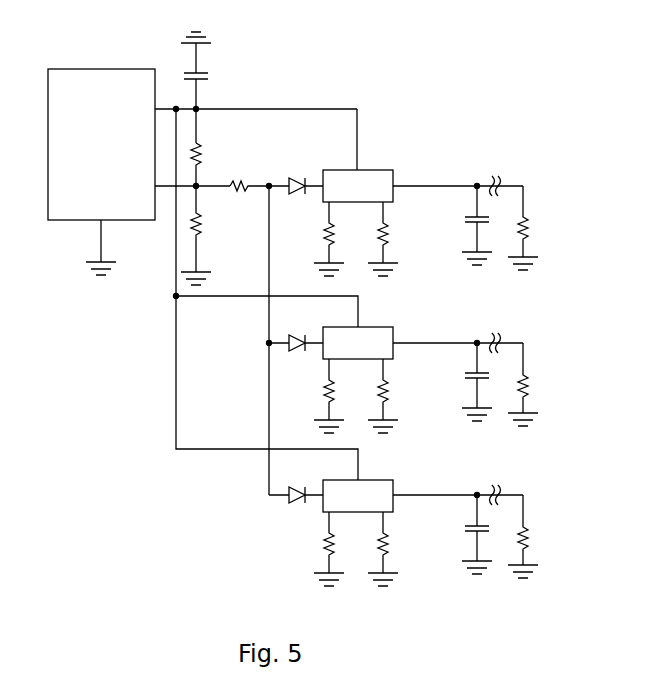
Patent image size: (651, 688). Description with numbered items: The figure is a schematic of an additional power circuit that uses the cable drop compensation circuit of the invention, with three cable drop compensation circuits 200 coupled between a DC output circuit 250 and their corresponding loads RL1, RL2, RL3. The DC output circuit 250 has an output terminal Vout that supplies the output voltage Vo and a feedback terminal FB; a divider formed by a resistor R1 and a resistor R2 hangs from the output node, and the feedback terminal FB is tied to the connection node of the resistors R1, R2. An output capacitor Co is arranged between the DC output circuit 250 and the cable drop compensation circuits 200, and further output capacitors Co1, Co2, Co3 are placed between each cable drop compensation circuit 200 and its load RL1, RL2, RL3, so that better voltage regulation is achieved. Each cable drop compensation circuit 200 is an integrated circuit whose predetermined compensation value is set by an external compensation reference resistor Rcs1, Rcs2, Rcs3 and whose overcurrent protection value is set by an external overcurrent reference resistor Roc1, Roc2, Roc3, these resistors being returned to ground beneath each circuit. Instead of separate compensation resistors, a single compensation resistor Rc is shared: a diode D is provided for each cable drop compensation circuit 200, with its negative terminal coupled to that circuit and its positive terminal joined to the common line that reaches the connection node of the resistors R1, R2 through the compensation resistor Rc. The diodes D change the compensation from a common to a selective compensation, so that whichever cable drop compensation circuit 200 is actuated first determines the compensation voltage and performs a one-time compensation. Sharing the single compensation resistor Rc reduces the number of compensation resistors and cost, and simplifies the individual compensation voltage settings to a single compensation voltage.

The DC output circuit 250 is at (88, 164).
The cable drop compensation circuit 200 is at (346, 196).
The output terminal Vout is at (235, 110).
The feedback terminal FB is at (180, 186).
The output voltage Vo is at (196, 108).
The output capacitor Co is at (201, 87).
The resistor R1 is at (209, 164).
The resistor R2 is at (204, 235).
The compensation resistor Rc is at (236, 181).
The diode D is at (296, 330).
The compensation reference resistor Rcs1 is at (309, 239).
The overcurrent reference resistor Roc1 is at (401, 239).
The output capacitor Co1 is at (466, 225).
The load RL1 is at (539, 228).
The compensation reference resistor Rcs2 is at (309, 396).
The overcurrent reference resistor Roc2 is at (401, 396).
The output capacitor Co2 is at (466, 382).
The load RL2 is at (539, 384).
The compensation reference resistor Rcs3 is at (309, 549).
The overcurrent reference resistor Roc3 is at (401, 549).
The output capacitor Co3 is at (466, 534).
The load RL3 is at (539, 536).